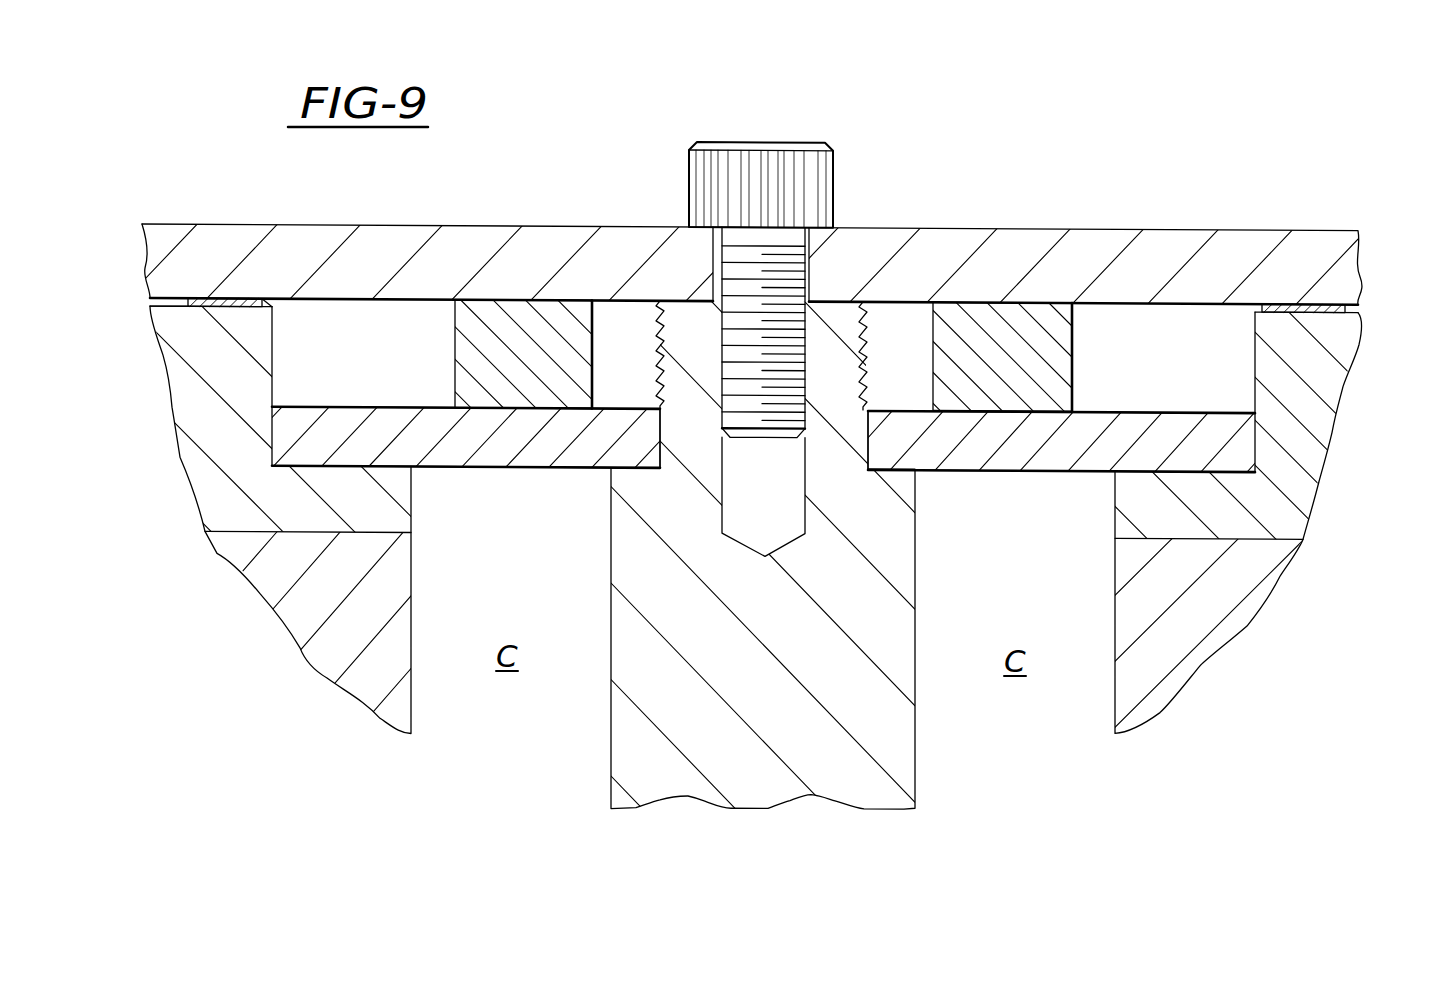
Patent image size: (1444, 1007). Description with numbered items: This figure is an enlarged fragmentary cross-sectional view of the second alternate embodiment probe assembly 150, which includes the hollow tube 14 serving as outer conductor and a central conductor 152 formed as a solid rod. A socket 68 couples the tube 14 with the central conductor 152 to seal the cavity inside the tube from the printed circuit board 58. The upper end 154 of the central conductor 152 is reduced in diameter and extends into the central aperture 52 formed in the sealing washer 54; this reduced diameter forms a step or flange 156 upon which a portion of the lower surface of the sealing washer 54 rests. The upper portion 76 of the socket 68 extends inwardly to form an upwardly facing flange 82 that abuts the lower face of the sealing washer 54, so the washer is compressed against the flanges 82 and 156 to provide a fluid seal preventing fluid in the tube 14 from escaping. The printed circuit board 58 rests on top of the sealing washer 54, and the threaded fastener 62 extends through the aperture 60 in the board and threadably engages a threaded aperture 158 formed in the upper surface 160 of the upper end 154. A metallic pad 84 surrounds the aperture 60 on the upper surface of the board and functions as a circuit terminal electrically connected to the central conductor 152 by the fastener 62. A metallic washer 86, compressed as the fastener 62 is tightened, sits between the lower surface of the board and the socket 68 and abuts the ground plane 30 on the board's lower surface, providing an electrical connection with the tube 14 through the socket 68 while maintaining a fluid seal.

The probe assembly 150 is at (1312, 171).
The printed circuit board 58 is at (1075, 235).
The metallic pad 84 is at (683, 226).
The metallic washer 86 is at (205, 300).
The ground plane 30 is at (245, 300).
The socket 68 is at (211, 476).
The upper portion 76 is at (187, 407).
The tube 14 is at (322, 653).
The sealing washer 54 is at (467, 448).
The central aperture 52 is at (658, 430).
The flange 156 is at (880, 468).
The upwardly facing flange 82 is at (1182, 473).
The upper surface 160 is at (670, 297).
The upper end 154 is at (852, 332).
The central conductor 152 is at (658, 783).
The threaded aperture 158 is at (805, 477).
The threaded fastener 62 is at (775, 140).
The aperture 60 is at (805, 246).